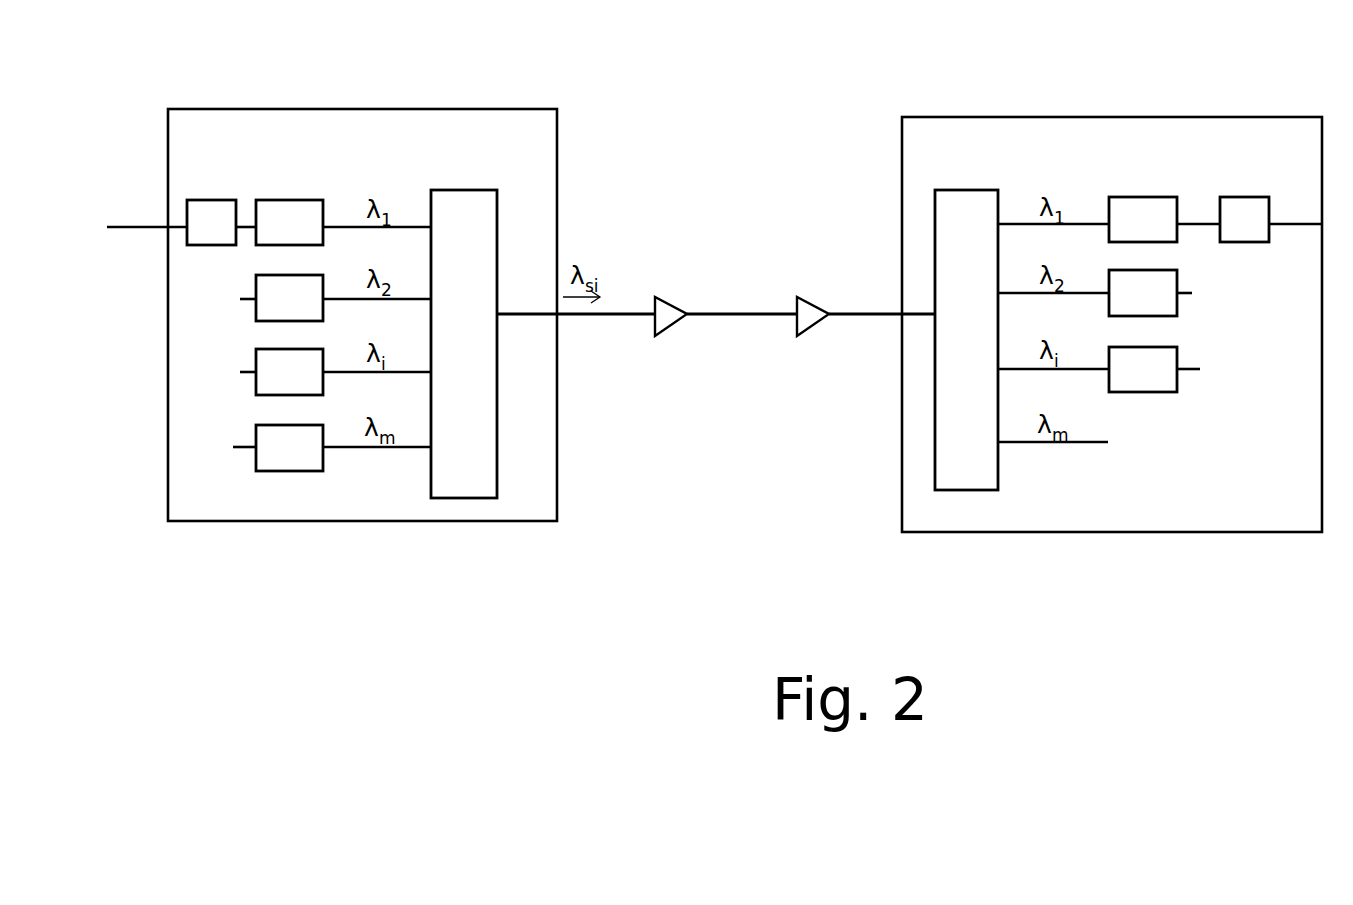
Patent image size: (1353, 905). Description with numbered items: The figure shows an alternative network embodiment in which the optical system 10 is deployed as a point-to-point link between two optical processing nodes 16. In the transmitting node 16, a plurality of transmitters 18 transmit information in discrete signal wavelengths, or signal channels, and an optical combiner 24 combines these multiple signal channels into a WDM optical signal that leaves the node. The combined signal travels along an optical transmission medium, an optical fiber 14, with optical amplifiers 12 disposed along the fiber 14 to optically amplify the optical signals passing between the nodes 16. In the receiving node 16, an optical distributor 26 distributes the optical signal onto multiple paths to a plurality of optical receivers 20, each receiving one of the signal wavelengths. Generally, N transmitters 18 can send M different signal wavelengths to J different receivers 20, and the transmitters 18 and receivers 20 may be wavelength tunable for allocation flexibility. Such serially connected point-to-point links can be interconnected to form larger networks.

The optical system 10 is at (1230, 583).
The optical amplifier 12 is at (687, 337).
The optical fiber 14 is at (850, 313).
The optical processing node 16 is at (357, 109).
The transmitter 18 is at (290, 201).
The optical receiver 20 is at (226, 200).
The optical combiner 24 is at (470, 190).
The optical distributor 26 is at (955, 188).